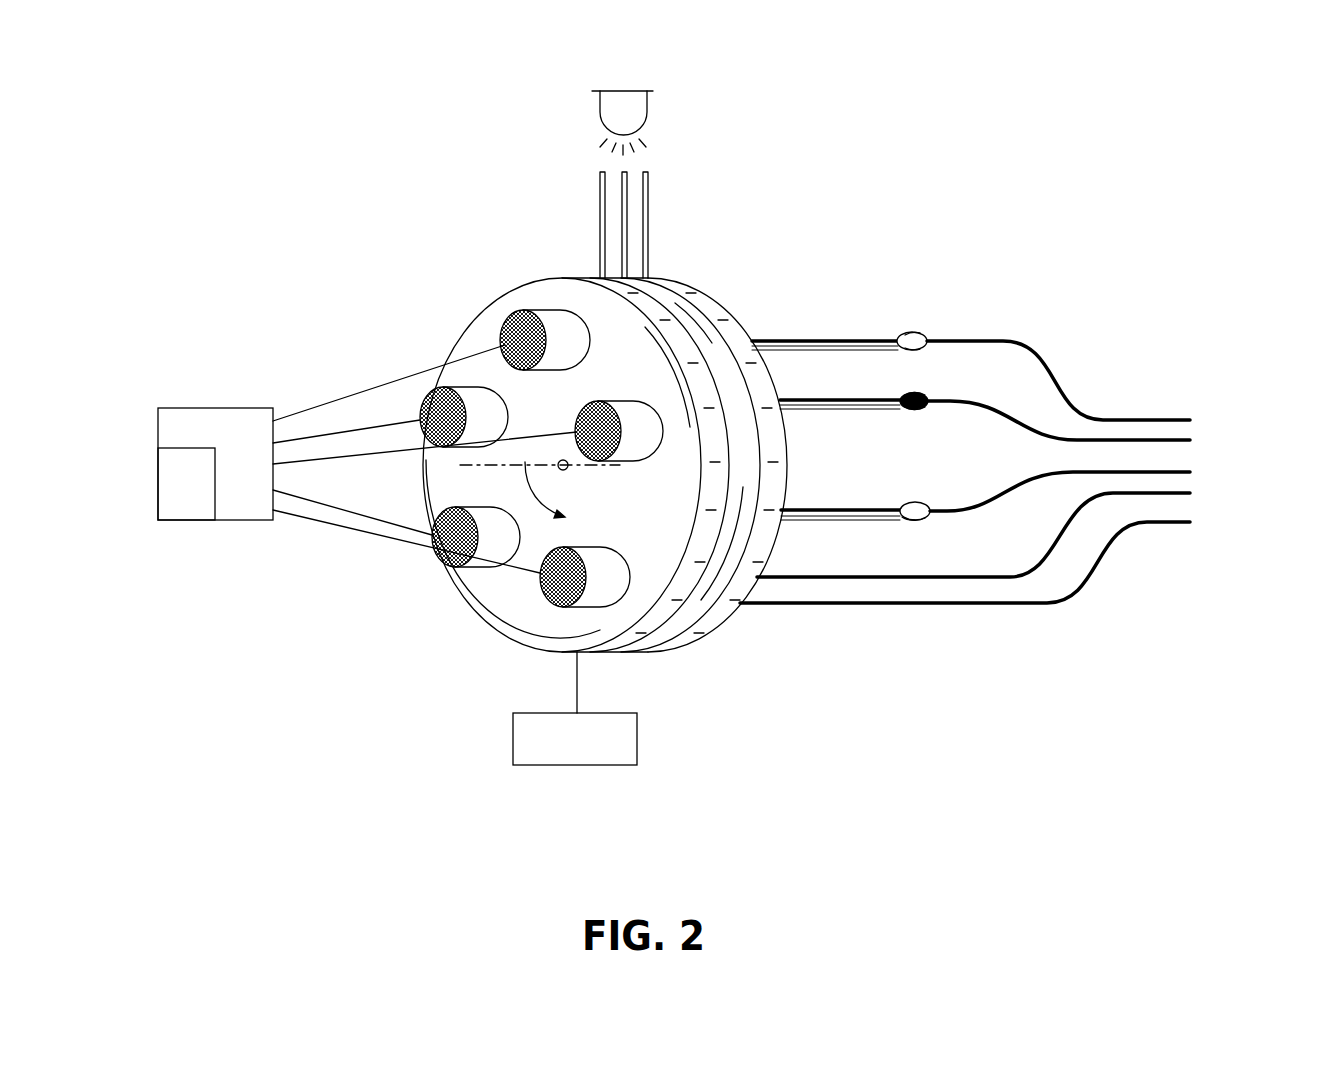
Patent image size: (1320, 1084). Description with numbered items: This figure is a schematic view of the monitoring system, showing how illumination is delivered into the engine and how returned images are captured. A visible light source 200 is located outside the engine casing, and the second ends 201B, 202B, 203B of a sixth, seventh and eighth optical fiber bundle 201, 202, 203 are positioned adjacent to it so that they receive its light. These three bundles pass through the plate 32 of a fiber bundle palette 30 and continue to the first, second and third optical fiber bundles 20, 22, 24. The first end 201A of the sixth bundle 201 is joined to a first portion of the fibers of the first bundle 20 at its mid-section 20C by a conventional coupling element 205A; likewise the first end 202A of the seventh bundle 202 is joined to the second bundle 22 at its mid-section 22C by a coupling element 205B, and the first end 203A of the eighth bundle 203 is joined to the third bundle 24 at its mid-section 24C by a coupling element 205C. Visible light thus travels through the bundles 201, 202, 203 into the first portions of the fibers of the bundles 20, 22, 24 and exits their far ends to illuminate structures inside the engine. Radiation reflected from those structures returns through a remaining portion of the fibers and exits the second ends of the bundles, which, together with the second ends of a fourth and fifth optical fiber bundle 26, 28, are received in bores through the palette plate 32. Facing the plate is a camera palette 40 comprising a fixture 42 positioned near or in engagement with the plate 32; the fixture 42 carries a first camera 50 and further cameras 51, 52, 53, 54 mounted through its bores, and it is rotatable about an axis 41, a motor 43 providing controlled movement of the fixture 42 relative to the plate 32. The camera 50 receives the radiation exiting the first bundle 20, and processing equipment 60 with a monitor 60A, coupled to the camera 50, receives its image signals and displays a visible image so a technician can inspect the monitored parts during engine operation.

The visible light source 200 is at (662, 97).
The second end of sixth optical fiber bundle 201B is at (645, 172).
The second end of seventh optical fiber bundle 202B is at (622, 172).
The second end of eighth optical fiber bundle 203B is at (600, 172).
The sixth optical fiber bundle 201 is at (780, 345).
The seventh optical fiber bundle 202 is at (857, 408).
The eighth optical fiber bundle 203 is at (822, 522).
The mid-section of first optical fiber bundle 20C is at (892, 324).
The mid-section of second optical fiber bundle 22C is at (884, 388).
The mid-section of third optical fiber bundle 24C is at (895, 496).
The coupling element 205A is at (915, 333).
The coupling element 205B is at (925, 393).
The coupling element 205C is at (920, 521).
The first end of sixth optical fiber bundle 201A is at (905, 355).
The first end of seventh optical fiber bundle 202A is at (903, 410).
The first end of eighth optical fiber bundle 203A is at (903, 521).
The first optical fiber bundle 20 is at (1145, 420).
The second optical fiber bundle 22 is at (1043, 428).
The third optical fiber bundle 24 is at (1185, 470).
The fourth optical fiber bundle 26 is at (1055, 567).
The fifth optical fiber bundle 28 is at (1165, 523).
The fiber bundle palette 30 is at (678, 660).
The plate 32 is at (722, 640).
The camera palette 40 is at (475, 620).
The axis 41 is at (620, 467).
The fixture 42 is at (510, 633).
The motor 43 is at (578, 767).
The first camera 50 is at (420, 407).
The second camera 51 is at (510, 318).
The third camera 52 is at (577, 422).
The fourth camera 53 is at (433, 520).
The fifth camera 54 is at (540, 583).
The processing equipment 60 is at (210, 392).
The monitor 60A is at (187, 505).